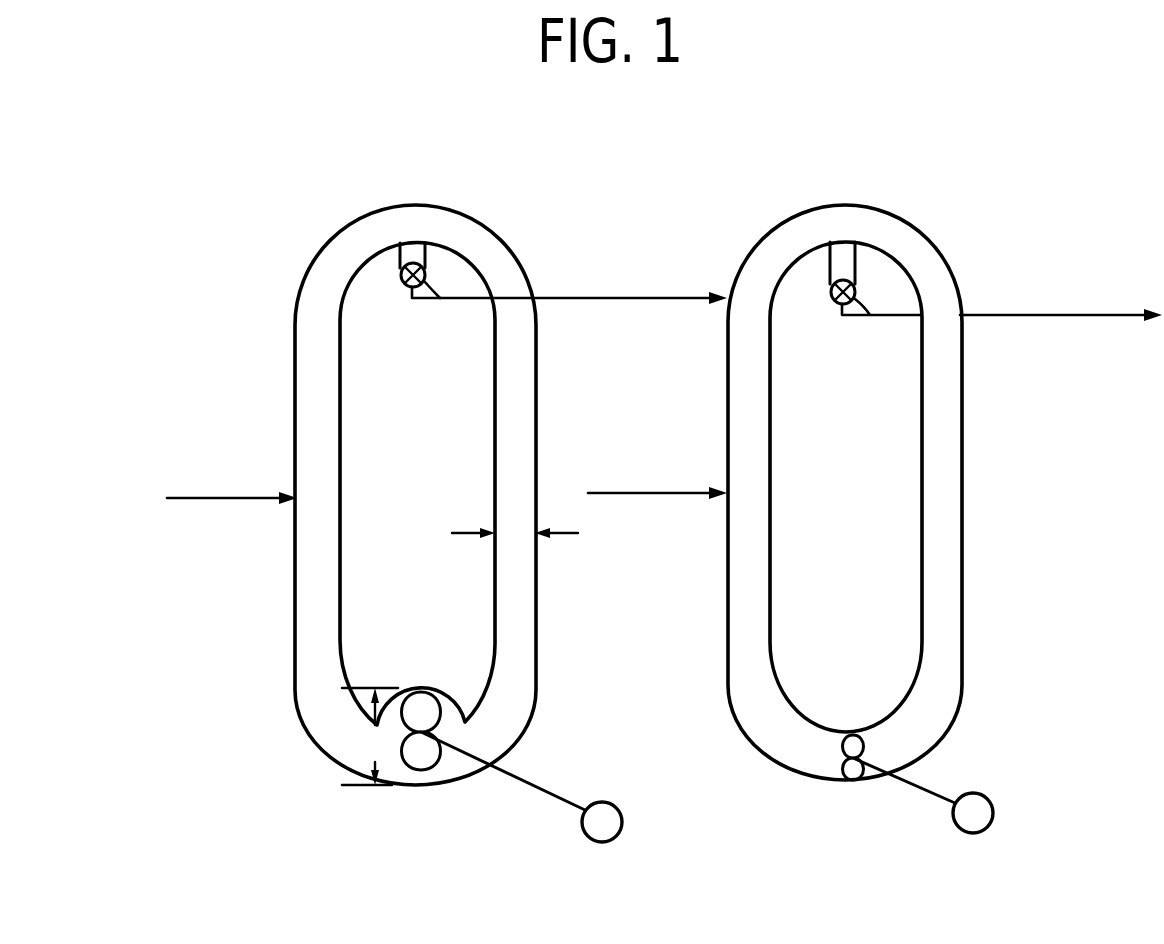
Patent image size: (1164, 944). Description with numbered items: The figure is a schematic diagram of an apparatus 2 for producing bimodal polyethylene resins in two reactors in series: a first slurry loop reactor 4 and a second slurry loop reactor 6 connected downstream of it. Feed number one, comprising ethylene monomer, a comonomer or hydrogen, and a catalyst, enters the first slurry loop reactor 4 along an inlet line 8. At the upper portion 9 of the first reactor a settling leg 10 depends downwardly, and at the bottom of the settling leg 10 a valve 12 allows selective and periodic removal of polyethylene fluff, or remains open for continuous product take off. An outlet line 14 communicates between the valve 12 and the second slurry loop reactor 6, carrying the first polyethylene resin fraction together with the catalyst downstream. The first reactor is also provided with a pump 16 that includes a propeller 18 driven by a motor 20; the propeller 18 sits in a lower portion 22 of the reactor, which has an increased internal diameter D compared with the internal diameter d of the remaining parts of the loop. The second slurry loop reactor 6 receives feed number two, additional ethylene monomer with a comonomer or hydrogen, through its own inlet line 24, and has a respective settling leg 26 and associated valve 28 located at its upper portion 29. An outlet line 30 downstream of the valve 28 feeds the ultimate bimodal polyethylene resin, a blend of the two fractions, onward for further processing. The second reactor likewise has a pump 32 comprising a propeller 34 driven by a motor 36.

The apparatus 2 is at (798, 184).
The first slurry loop reactor 4 is at (405, 511).
The second slurry loop reactor 6 is at (826, 491).
The inlet line 8 is at (247, 500).
The upper portion 9 is at (318, 255).
The settling leg 10 is at (393, 262).
The valve 12 is at (442, 300).
The outlet line 14 is at (598, 295).
The pump 16 is at (590, 838).
The propeller 18 is at (440, 692).
The motor 20 is at (610, 805).
The lower portion 22 is at (393, 688).
The inlet line 24 is at (677, 495).
The settling leg 26 is at (830, 265).
The valve 28 is at (853, 304).
The upper portion 29 is at (945, 257).
The outlet line 30 is at (1078, 313).
The pump 32 is at (913, 787).
The propeller 34 is at (855, 735).
The motor 36 is at (985, 798).